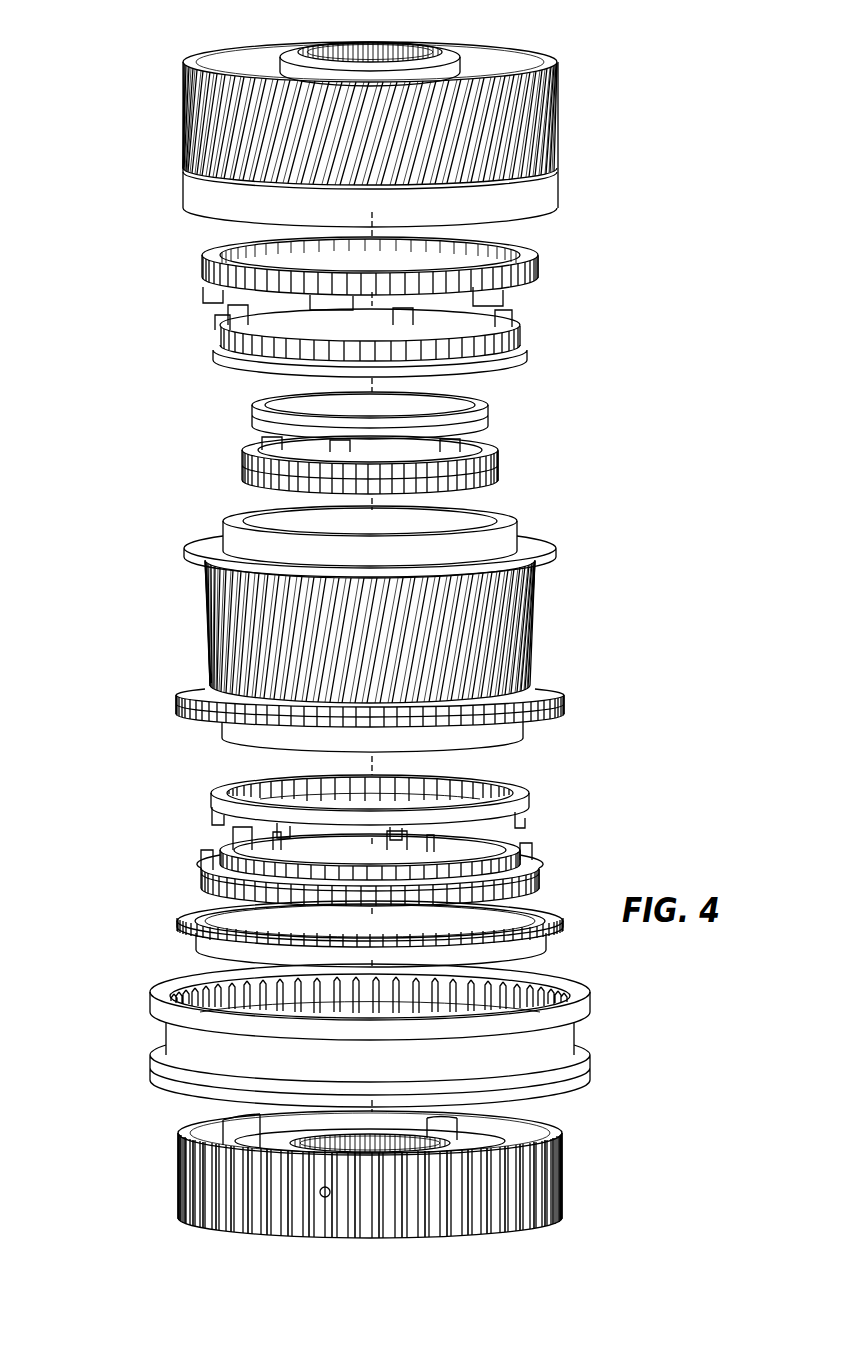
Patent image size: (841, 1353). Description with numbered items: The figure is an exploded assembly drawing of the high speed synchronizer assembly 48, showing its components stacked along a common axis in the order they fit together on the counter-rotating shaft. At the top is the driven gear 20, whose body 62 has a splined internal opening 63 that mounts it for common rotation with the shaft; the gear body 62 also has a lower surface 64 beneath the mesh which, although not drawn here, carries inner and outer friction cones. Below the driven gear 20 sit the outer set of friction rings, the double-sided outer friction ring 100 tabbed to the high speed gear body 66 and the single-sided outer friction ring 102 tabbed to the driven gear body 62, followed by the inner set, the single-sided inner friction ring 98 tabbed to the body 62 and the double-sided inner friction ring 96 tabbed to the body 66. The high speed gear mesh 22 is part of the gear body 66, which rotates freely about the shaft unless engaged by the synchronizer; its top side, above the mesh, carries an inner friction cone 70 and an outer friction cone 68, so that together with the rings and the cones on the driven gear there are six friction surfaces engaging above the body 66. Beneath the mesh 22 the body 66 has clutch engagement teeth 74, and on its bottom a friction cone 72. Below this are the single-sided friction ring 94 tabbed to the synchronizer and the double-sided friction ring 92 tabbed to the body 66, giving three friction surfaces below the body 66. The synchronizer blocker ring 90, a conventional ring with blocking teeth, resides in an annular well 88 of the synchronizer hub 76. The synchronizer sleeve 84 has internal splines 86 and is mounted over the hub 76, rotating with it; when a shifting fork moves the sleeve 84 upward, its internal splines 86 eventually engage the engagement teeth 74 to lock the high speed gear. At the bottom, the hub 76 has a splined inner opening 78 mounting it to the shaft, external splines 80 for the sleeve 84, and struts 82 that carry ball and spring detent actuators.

The high speed synchronizer assembly 48 is at (66, 148).
The driven gear 20 is at (558, 102).
The gear body 62 is at (558, 150).
The splined internal opening 63 is at (340, 50).
The lower surface 64 is at (553, 204).
The outer friction ring 100 is at (200, 258).
The outer friction ring 102 is at (212, 340).
The inner friction ring 98 is at (252, 412).
The inner friction ring 96 is at (243, 473).
The high speed gear mesh 22 is at (538, 603).
The inner friction cone 70 is at (468, 518).
The outer friction cone 68 is at (520, 530).
The gear body 66 is at (543, 645).
The clutch engagement teeth 74 is at (566, 700).
The friction cone 72 is at (513, 735).
The single-sided friction ring 94 is at (528, 812).
The double-sided friction ring 92 is at (540, 878).
The synchronizer blocker ring 90 is at (200, 946).
The synchronizer sleeve 84 is at (588, 1037).
The internal splines 86 is at (545, 968).
The synchronizer hub 76 is at (483, 1222).
The splined inner opening 78 is at (430, 1135).
The external splines 80 is at (560, 1188).
The struts 82 is at (322, 1196).
The annular well 88 is at (213, 1133).